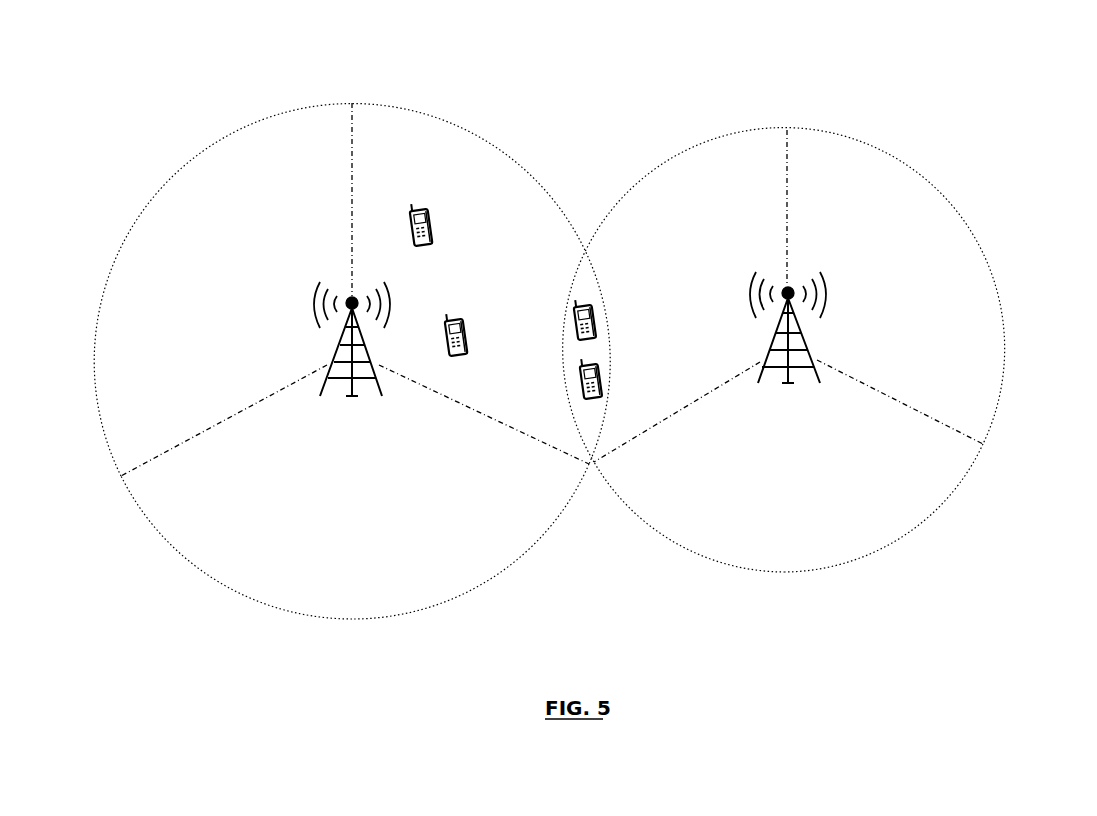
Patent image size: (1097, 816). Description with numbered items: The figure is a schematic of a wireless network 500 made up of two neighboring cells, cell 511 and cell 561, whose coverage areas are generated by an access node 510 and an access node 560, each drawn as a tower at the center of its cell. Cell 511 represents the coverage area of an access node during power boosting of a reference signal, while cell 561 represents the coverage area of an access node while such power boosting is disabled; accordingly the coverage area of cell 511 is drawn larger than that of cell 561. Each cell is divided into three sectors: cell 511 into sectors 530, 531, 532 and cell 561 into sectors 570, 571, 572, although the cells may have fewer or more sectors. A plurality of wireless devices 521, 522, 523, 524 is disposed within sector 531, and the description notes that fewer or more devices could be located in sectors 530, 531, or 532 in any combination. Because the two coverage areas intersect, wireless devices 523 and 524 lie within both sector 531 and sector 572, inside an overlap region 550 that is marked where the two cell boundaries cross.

The wireless network 500 is at (564, 21).
The access node 510 is at (338, 357).
The cell 511 is at (207, 568).
The wireless device 521 is at (432, 239).
The wireless device 522 is at (461, 322).
The wireless device 523 is at (596, 306).
The wireless device 524 is at (601, 364).
The sector 530 is at (509, 573).
The sector 531 is at (472, 130).
The sector 532 is at (326, 349).
The overlap region 550 is at (588, 270).
The access node 560 is at (777, 343).
The cell 561 is at (784, 575).
The sector 570 is at (925, 525).
The sector 571 is at (820, 354).
The sector 572 is at (720, 135).